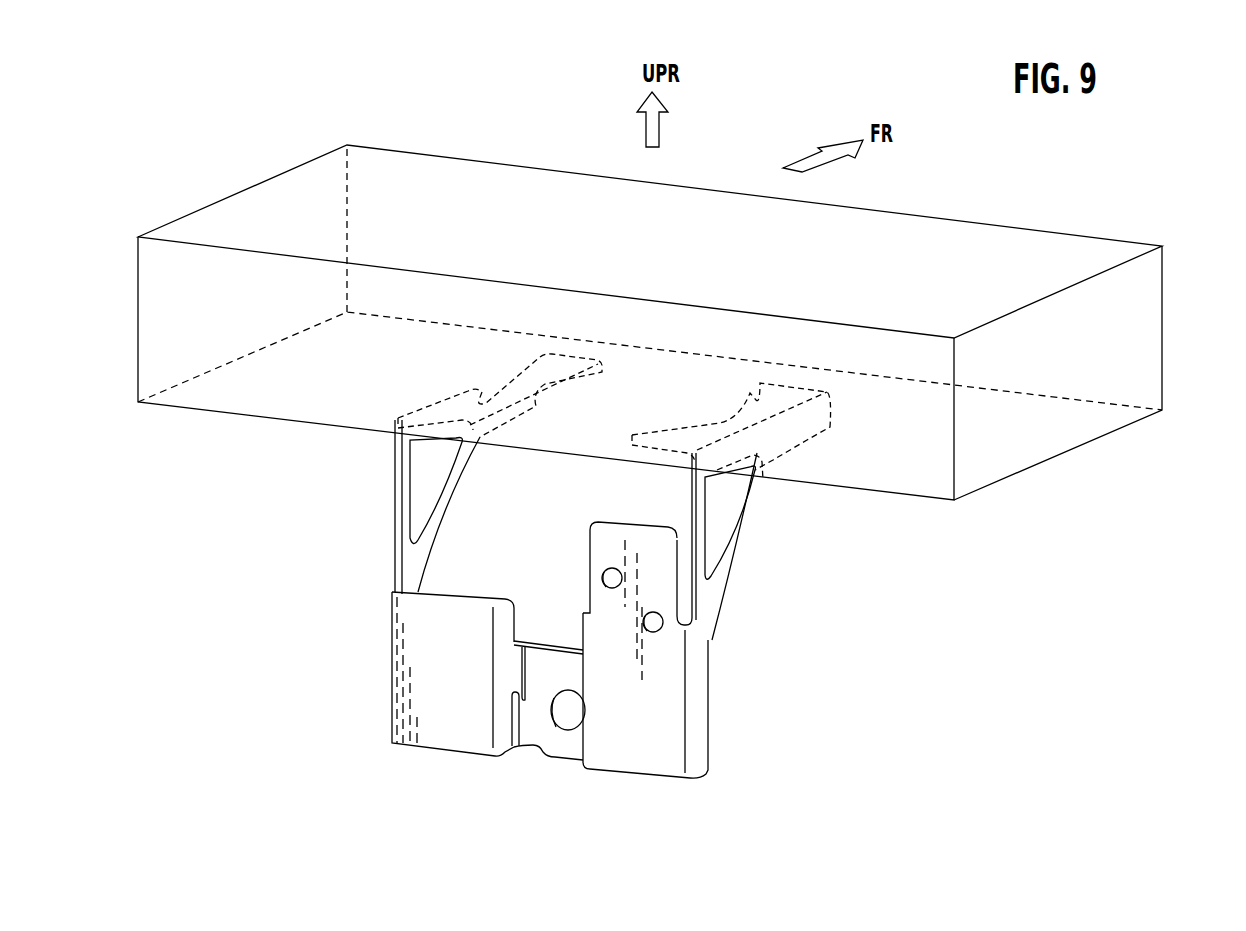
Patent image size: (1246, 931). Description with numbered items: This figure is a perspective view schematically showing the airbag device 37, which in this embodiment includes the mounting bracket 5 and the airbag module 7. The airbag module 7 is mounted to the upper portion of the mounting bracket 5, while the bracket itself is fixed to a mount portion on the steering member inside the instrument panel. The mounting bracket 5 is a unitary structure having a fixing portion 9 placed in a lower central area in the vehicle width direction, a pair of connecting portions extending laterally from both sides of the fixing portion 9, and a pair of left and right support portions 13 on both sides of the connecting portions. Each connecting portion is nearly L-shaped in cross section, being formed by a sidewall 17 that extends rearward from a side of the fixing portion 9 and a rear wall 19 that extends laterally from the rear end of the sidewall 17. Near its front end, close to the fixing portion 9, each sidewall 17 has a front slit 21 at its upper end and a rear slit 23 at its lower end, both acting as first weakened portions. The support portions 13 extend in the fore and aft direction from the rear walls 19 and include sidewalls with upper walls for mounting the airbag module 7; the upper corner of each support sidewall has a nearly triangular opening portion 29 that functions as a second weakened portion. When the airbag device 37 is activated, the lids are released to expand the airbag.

The mounting bracket 5 is at (390, 615).
The airbag module 7 is at (1150, 347).
The fixing portion 9 is at (563, 742).
The support portion 13 is at (727, 553).
The sidewall 17 is at (512, 687).
The rear wall 19 is at (635, 740).
The front slit 21 is at (522, 676).
The rear slit 23 is at (512, 725).
The opening portion 29 is at (423, 460).
The airbag device 37 is at (1025, 587).